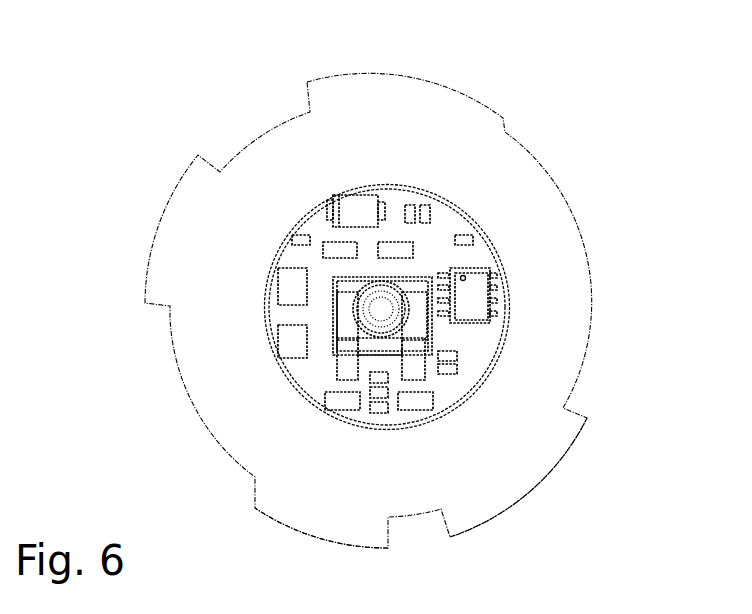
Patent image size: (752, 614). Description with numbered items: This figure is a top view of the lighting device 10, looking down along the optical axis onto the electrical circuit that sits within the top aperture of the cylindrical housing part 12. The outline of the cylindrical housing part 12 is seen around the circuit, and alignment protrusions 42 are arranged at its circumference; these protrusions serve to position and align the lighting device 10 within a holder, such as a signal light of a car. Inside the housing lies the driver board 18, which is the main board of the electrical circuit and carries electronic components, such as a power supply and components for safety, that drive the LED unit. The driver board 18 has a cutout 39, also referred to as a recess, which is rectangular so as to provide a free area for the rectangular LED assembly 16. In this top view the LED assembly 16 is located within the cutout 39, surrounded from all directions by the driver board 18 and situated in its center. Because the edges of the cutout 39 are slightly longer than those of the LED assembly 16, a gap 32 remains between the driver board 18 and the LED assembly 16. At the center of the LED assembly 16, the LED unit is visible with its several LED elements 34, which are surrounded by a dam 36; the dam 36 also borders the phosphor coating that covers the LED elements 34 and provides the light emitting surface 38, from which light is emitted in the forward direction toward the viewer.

The lighting device 10 is at (361, 288).
The cylindrical housing part 12 is at (550, 360).
The LED assembly 16 is at (426, 276).
The driver board 18 is at (475, 340).
The gap 32 is at (368, 356).
The LED elements 34 is at (373, 311).
The dam 36 is at (383, 319).
The light emitting surface 38 is at (389, 312).
The cutout 39 is at (394, 263).
The alignment protrusions 42 is at (360, 532).